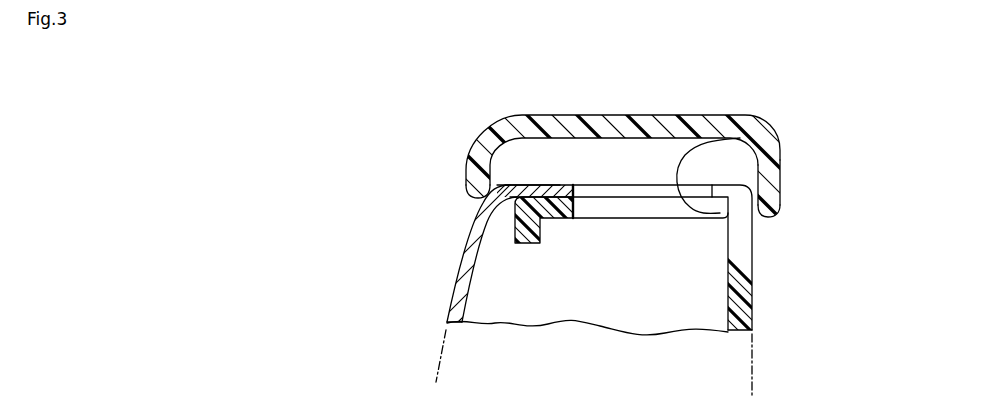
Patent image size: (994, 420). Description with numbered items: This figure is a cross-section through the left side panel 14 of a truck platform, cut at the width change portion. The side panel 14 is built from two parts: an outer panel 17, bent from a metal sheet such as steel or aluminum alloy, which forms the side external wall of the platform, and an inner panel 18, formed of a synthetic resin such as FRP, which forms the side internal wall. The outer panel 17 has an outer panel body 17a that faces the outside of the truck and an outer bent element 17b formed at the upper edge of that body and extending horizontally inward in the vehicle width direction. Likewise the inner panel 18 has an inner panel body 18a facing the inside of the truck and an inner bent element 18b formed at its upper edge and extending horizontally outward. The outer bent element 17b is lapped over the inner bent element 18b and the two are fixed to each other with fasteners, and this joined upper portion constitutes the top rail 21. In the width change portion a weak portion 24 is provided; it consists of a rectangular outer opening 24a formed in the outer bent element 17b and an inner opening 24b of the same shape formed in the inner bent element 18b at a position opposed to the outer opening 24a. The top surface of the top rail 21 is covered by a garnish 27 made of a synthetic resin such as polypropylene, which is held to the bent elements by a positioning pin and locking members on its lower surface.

The side panel 14 is at (570, 231).
The outer panel 17 is at (452, 287).
The outer panel body 17a is at (447, 321).
The outer bent element 17b is at (555, 185).
The inner panel 18 is at (756, 284).
The inner panel body 18a is at (755, 311).
The inner bent element 18b is at (563, 220).
The top rail 21 is at (527, 178).
The weak portion for change portion 24 is at (678, 225).
The outer opening 24a is at (695, 172).
The inner opening 24b is at (722, 137).
The garnish 27 is at (780, 192).